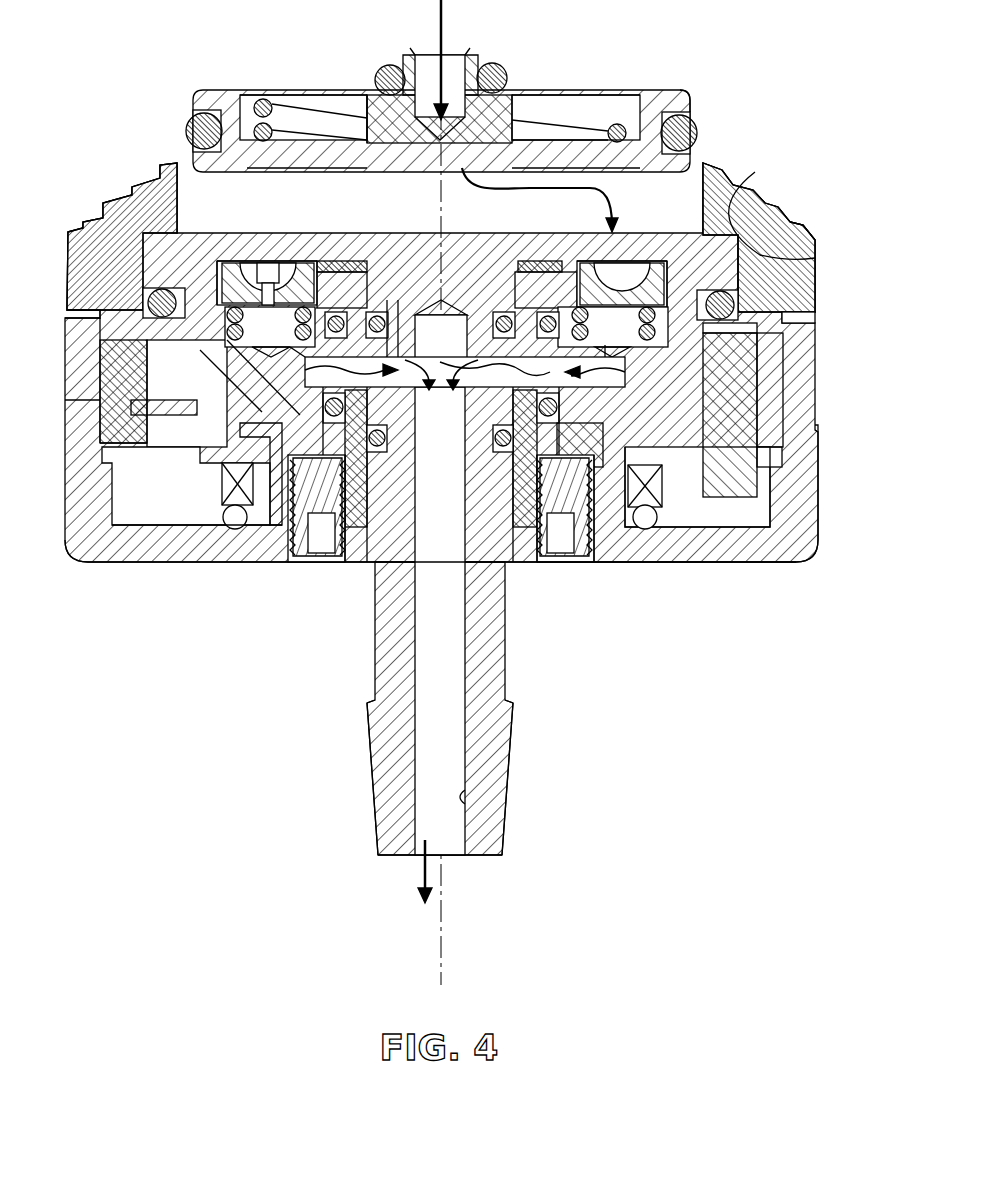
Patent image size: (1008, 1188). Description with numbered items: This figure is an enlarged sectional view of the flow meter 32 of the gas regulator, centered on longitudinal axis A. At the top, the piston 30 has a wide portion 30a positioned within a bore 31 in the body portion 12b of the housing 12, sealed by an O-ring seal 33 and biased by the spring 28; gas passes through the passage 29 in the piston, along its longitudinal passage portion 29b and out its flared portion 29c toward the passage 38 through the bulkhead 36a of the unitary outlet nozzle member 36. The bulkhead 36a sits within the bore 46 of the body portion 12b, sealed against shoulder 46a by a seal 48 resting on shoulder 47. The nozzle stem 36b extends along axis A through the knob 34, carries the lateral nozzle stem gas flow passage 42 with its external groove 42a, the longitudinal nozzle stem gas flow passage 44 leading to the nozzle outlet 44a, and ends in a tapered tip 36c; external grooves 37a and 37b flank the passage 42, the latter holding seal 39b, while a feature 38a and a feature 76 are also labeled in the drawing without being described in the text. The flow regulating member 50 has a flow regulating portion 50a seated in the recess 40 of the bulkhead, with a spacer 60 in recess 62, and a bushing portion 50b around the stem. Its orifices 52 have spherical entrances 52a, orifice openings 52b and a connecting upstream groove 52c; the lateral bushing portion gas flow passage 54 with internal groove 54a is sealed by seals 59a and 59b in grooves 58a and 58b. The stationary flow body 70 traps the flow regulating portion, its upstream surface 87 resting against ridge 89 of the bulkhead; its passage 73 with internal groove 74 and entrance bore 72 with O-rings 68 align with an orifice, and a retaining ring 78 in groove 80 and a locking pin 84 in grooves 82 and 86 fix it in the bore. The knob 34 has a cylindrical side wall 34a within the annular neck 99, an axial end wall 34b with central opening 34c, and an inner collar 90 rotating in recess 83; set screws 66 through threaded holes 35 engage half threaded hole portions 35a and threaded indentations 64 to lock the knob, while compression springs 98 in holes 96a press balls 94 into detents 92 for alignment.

The housing 12 is at (810, 245).
The body portion 12b is at (790, 225).
The spring 28 is at (565, 125).
The passage 29 is at (428, 75).
The longitudinal passage portion 29b is at (455, 62).
The flared portion 29c is at (378, 165).
The piston 30 is at (652, 88).
The wide portion 30a is at (683, 92).
The bore 31 is at (150, 200).
The flow meter 32 is at (205, 684).
The seal 33 is at (698, 133).
The knob 34 is at (808, 470).
The cylindrical side wall 34a is at (818, 450).
The axial end wall 34b is at (735, 567).
The central opening 34c is at (545, 565).
The threaded holes 35 is at (300, 565).
The half threaded hole portions 35a is at (598, 505).
The unitary outlet nozzle member 36 is at (495, 662).
The bulkhead 36a is at (492, 262).
The nozzle stem 36b is at (500, 755).
The tapered tip 36c is at (513, 702).
The external groove 37a is at (385, 470).
The external groove 37b is at (399, 320).
The passage 38 is at (600, 262).
The lower seal 38a is at (390, 445).
The seal 39b is at (388, 300).
The recess 40 is at (283, 262).
The lateral nozzle stem gas flow passage 42 is at (437, 357).
The external groove 42a is at (455, 308).
The longitudinal nozzle stem gas flow passage 44 is at (470, 797).
The nozzle outlet 44a is at (457, 857).
The bore 46 is at (785, 222).
The shoulder 46a is at (735, 200).
The shoulder 47 is at (745, 272).
The seal 48 is at (738, 300).
The flow regulating member 50 is at (338, 298).
The flow regulating portion 50a is at (230, 258).
The bushing portion 50b is at (378, 500).
The orifices 52 is at (262, 275).
The spherical entrances 52a is at (640, 262).
The orifice openings 52b is at (608, 258).
The upstream groove 52c is at (275, 260).
The lateral bushing portion gas flow passage 54 is at (490, 350).
The internal groove 54a is at (390, 425).
The external groove 58a is at (300, 400).
The external groove 58b is at (290, 365).
The seal 59a is at (318, 378).
The seal 59b is at (272, 345).
The spacer 60 is at (340, 262).
The recess 62 is at (372, 312).
The threaded indentations 64 is at (355, 563).
The set screws 66 is at (325, 548).
The O-rings 68 is at (120, 360).
The flow body 70 is at (120, 395).
The entrance bore 72 is at (255, 347).
The passage 73 is at (628, 360).
The internal groove 74 is at (565, 423).
The retainer block 76 is at (190, 414).
The retaining ring 78 is at (115, 447).
The groove 80 is at (130, 407).
The groove 82 is at (735, 372).
The recess 83 is at (272, 458).
The locking pin 84 is at (760, 510).
The groove 86 is at (765, 400).
The upstream surface 87 is at (90, 337).
The ridge 89 is at (140, 247).
The collar 90 is at (603, 455).
The detents 92 is at (240, 537).
The balls 94 is at (233, 530).
The holes 96a is at (222, 515).
The compression springs 98 is at (505, 78).
The annular neck 99 is at (795, 316).
The longitudinal axis A is at (440, 945).